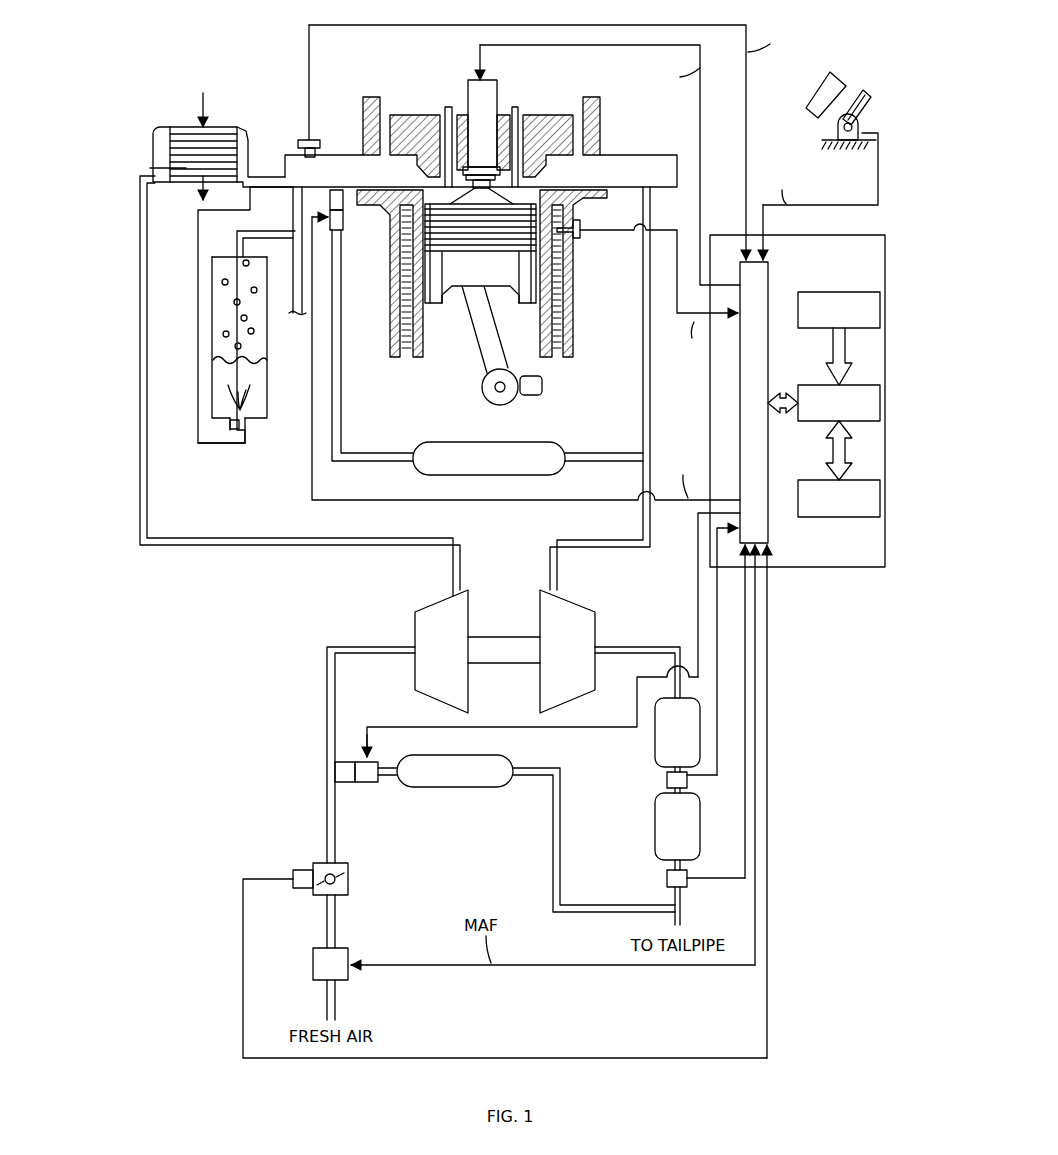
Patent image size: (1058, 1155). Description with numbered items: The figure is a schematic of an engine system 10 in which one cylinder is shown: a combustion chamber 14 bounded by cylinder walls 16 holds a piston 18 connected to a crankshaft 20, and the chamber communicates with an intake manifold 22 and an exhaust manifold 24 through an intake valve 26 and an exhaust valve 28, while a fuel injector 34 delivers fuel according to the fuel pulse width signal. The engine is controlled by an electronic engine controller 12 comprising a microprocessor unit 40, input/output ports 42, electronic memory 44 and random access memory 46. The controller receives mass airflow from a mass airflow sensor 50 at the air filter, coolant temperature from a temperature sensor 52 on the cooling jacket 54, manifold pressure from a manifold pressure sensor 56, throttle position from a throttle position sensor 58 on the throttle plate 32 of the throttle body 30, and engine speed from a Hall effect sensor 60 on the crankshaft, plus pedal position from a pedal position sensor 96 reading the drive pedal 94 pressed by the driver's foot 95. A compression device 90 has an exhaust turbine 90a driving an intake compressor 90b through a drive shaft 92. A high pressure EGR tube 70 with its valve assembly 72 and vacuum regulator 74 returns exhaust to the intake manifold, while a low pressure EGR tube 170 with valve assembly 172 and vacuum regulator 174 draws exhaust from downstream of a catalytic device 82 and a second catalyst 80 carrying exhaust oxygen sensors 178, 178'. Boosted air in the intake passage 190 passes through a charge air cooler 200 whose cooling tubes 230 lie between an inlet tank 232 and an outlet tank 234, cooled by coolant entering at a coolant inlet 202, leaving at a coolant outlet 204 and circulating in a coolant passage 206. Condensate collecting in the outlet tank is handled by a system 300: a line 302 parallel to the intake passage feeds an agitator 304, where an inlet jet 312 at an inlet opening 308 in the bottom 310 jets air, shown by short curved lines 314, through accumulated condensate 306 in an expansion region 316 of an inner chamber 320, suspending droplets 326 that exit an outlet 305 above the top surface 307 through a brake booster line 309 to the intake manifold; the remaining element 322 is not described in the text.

The engine system 10 is at (385, 373).
The electronic engine controller 12 is at (837, 243).
The combustion chamber 14 is at (458, 198).
The cylinder walls 16 is at (421, 349).
The piston 18 is at (464, 294).
The crankshaft 20 is at (484, 397).
The intake manifold 22 is at (365, 171).
The exhaust manifold 24 is at (597, 171).
The intake valve 26 is at (446, 128).
The exhaust valve 28 is at (518, 128).
The throttle body 30 is at (350, 870).
The throttle plate 32 is at (345, 881).
The fuel injector 34 is at (470, 96).
The microprocessor unit 40 is at (860, 384).
The input/output ports 42 is at (772, 280).
The electronic memory 44 is at (843, 291).
The random access memory 46 is at (840, 519).
The mass airflow sensor 50 is at (352, 957).
The temperature sensor 52 is at (583, 234).
The cooling jacket 54 is at (558, 328).
The manifold pressure sensor 56 is at (306, 138).
The throttle position sensor 58 is at (304, 870).
The Hall effect sensor 60 is at (542, 386).
The high pressure EGR tube 70 is at (404, 446).
The high pressure EGR valve assembly 72 is at (345, 200).
The vacuum regulator 74 is at (345, 218).
The second catalyst 80 is at (677, 829).
The catalytic device 82 is at (677, 735).
The compression device 90 is at (399, 622).
The exhaust turbine 90a is at (567, 651).
The intake compressor 90b is at (441, 651).
The drive shaft 92 is at (504, 636).
The drive pedal 94 is at (868, 96).
The driver's foot 95 is at (824, 96).
The pedal position sensor 96 is at (837, 136).
The low pressure EGR tube 170 is at (553, 840).
The low pressure EGR valve assembly 172 is at (372, 784).
The vacuum regulator 174 is at (348, 761).
The exhaust oxygen sensor 178 is at (700, 788).
The exhaust oxygen sensor 178' is at (706, 897).
The intake passage 190 is at (213, 548).
The charge air cooler 200 is at (196, 127).
The coolant inlet 202 is at (208, 101).
The coolant outlet 204 is at (199, 192).
The coolant passage 206 is at (150, 168).
The cooling tubes 230 is at (179, 127).
The inlet tank 232 is at (160, 147).
The outlet tank 234 is at (243, 150).
The system 300 is at (258, 470).
The line 302 is at (194, 254).
The agitator 304 is at (270, 314).
The outlet 305 is at (237, 255).
The condensate 306 is at (254, 375).
The top surface 307 is at (258, 360).
The inlet opening 308 is at (243, 412).
The brake booster line 309 is at (297, 243).
The bottom 310 is at (215, 425).
The inlet jet 312 is at (233, 428).
The short curved lines 314 is at (235, 400).
The expansion region 316 is at (210, 291).
The inner chamber 320 is at (258, 263).
The chamber 322 is at (283, 228).
The droplets 326 is at (223, 334).